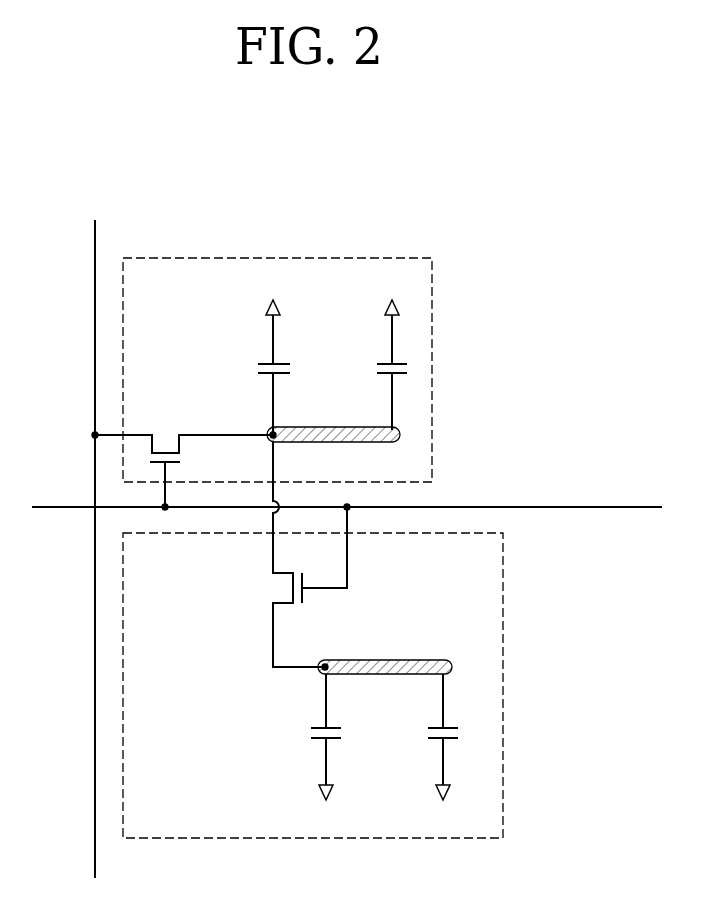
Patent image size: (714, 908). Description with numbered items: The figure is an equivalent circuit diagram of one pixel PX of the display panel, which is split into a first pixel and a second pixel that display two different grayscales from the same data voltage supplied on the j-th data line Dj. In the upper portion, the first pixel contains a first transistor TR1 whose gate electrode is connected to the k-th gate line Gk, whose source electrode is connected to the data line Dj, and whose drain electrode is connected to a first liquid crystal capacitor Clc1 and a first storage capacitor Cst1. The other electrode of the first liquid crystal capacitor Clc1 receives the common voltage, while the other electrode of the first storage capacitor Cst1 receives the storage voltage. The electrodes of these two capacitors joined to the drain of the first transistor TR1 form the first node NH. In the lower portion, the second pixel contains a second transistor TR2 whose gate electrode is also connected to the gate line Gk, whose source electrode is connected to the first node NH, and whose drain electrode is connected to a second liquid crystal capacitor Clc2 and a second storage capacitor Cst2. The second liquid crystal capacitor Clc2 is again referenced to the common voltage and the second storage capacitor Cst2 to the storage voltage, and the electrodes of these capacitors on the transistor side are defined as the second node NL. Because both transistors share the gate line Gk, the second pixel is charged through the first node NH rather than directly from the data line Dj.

The j-th data line Dj is at (94, 535).
The k-th gate line Gk is at (332, 509).
The pixel PX is at (496, 191).
The first transistor TR1 is at (185, 448).
The second transistor TR2 is at (313, 597).
The first liquid crystal capacitor Clc1 is at (251, 354).
The first storage capacitor Cst1 is at (366, 351).
The second liquid crystal capacitor Clc2 is at (305, 752).
The second storage capacitor Cst2 is at (419, 752).
The first node NH is at (333, 422).
The second node NL is at (385, 653).